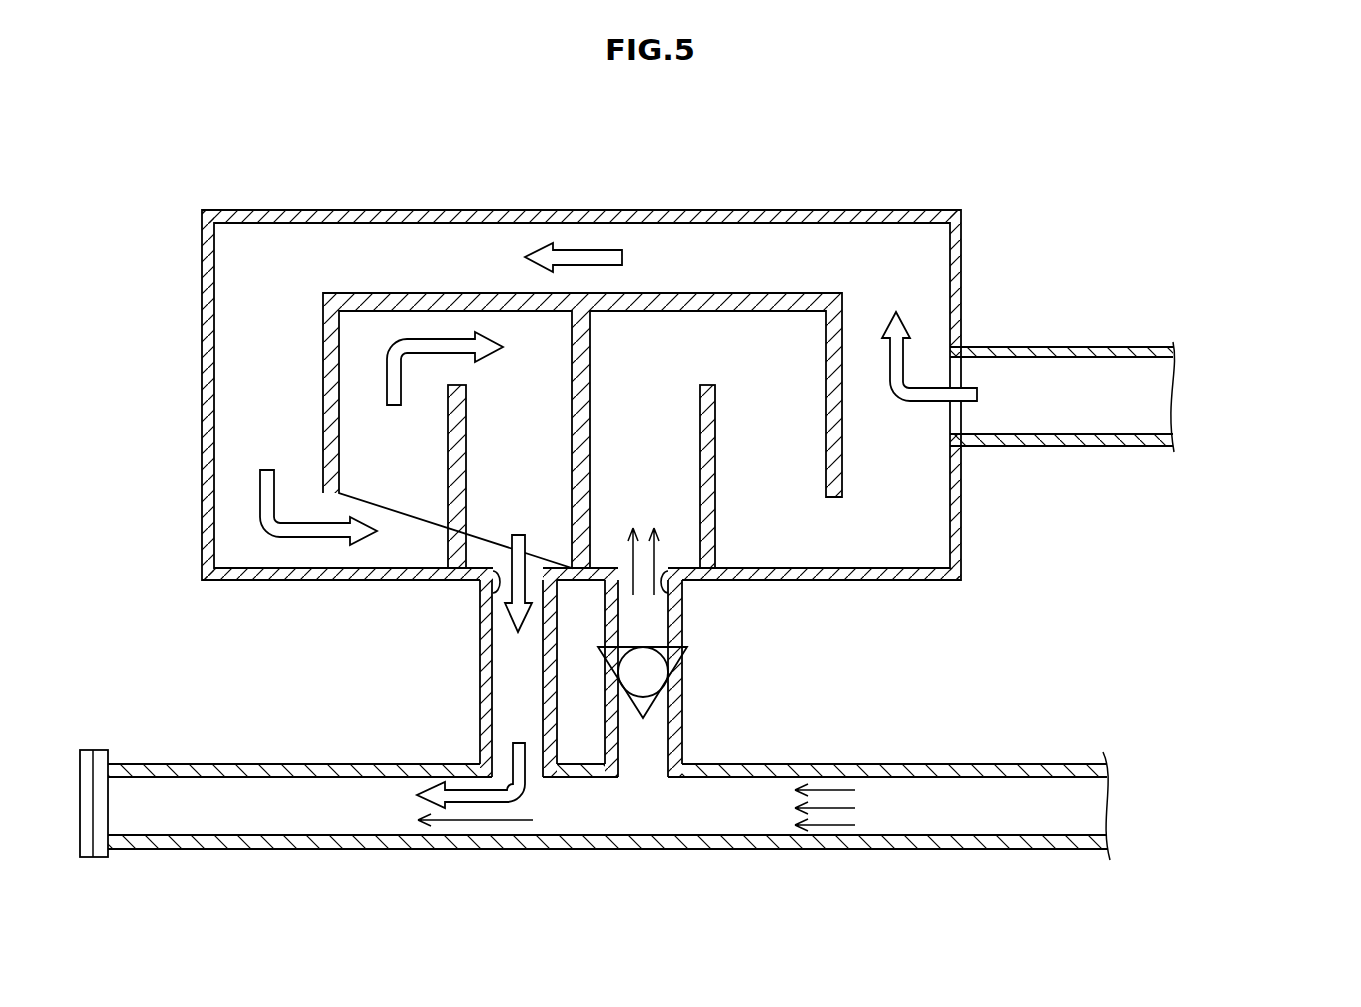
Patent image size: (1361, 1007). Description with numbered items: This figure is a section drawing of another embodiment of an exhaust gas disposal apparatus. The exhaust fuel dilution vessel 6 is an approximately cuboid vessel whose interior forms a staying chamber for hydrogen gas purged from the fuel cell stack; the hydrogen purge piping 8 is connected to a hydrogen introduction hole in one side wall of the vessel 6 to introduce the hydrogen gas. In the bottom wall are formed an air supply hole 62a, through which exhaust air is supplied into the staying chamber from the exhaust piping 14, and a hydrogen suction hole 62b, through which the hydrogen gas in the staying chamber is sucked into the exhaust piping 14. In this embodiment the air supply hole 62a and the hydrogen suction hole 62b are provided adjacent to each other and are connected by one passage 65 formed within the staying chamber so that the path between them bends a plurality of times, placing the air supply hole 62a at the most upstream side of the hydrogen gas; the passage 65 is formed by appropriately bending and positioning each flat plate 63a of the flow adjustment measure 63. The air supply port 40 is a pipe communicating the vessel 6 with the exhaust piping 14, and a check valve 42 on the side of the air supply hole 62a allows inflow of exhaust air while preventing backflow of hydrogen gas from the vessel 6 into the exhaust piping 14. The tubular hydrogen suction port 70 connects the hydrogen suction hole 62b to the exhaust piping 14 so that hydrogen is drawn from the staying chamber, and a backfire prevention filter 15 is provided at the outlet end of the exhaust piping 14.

The exhaust fuel dilution vessel 6 is at (968, 243).
The hydrogen purge piping 8 is at (1090, 446).
The exhaust piping 14 is at (734, 852).
The backfire prevention filter 15 is at (85, 750).
The air supply port 40 is at (682, 730).
The check valve 42 is at (653, 682).
The air supply hole 62a is at (673, 593).
The hydrogen suction hole 62b is at (493, 593).
The flow adjustment measure 63 is at (658, 288).
The flat plate 63a is at (448, 470).
The passage 65 is at (832, 266).
The hydrogen suction port 70 is at (480, 688).